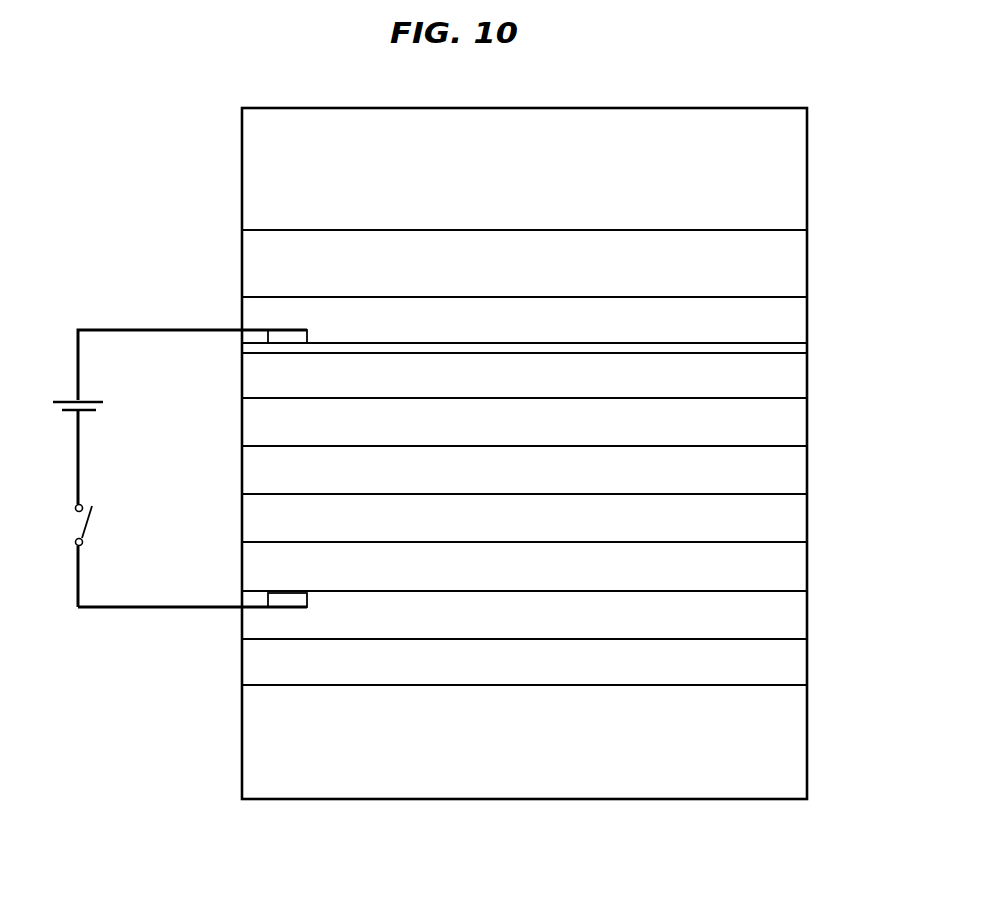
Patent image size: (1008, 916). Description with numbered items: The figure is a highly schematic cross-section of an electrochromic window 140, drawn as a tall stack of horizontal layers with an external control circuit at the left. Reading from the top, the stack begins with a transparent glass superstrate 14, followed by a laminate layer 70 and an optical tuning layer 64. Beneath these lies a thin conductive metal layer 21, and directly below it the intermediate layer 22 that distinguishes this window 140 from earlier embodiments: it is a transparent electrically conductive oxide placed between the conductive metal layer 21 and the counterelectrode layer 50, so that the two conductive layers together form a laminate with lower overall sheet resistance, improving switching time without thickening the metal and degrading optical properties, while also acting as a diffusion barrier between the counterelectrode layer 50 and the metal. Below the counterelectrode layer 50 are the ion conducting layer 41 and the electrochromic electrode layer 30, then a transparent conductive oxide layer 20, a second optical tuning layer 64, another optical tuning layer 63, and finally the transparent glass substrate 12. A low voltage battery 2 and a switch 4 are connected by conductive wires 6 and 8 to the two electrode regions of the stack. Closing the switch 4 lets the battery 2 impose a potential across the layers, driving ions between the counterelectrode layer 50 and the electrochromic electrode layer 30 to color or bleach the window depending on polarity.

The window 140 is at (192, 234).
The transparent glass superstrate 14 is at (795, 152).
The laminate layer 70 is at (798, 260).
The optical tuning layer 64 is at (790, 317).
The conductive metal layer 21 is at (795, 345).
The intermediate layer 22 is at (790, 372).
The counterelectrode layer 50 is at (800, 420).
The ion conducting layer 41 is at (800, 463).
The electrochromic electrode layer 30 is at (800, 520).
The transparent conductive oxide layer 20 is at (800, 562).
The optical tuning layer 63 is at (800, 672).
The transparent glass substrate 12 is at (800, 718).
The conductive wire 6 is at (125, 330).
The low voltage battery 2 is at (65, 401).
The switch 4 is at (87, 523).
The conductive wire 8 is at (145, 607).